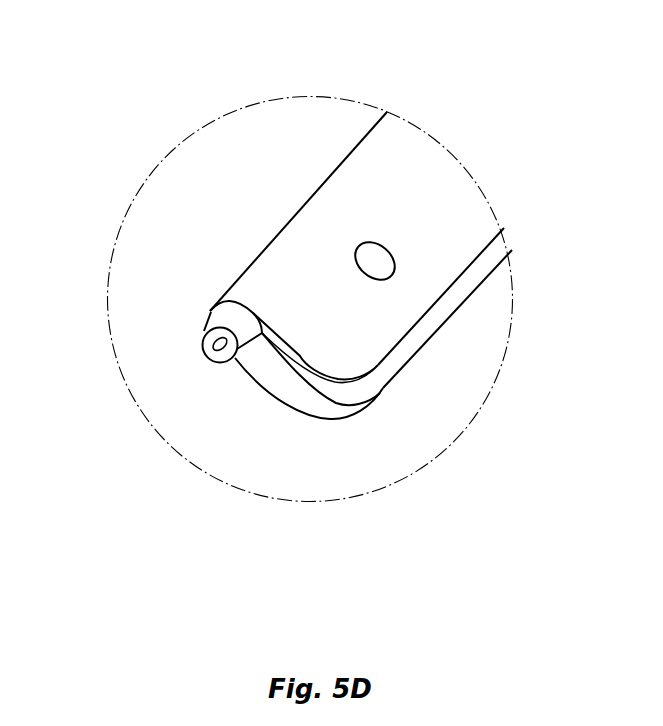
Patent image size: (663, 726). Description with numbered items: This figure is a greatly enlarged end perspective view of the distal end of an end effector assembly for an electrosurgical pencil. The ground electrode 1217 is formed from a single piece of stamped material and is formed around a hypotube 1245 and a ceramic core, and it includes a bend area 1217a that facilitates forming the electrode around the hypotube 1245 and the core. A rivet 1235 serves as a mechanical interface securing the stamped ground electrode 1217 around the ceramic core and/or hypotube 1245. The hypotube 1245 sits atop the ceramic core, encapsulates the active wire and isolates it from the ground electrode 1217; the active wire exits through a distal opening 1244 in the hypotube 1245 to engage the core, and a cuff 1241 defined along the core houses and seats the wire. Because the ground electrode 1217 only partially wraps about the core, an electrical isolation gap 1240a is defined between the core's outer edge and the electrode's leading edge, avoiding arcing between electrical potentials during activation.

The ground electrode 1217 is at (452, 188).
The bend area 1217a is at (320, 197).
The rivet 1235 is at (378, 258).
The electrical isolation gap 1240a is at (425, 318).
The cuff 1241 is at (308, 417).
The distal opening 1244 is at (216, 346).
The hypotube 1245 is at (225, 320).